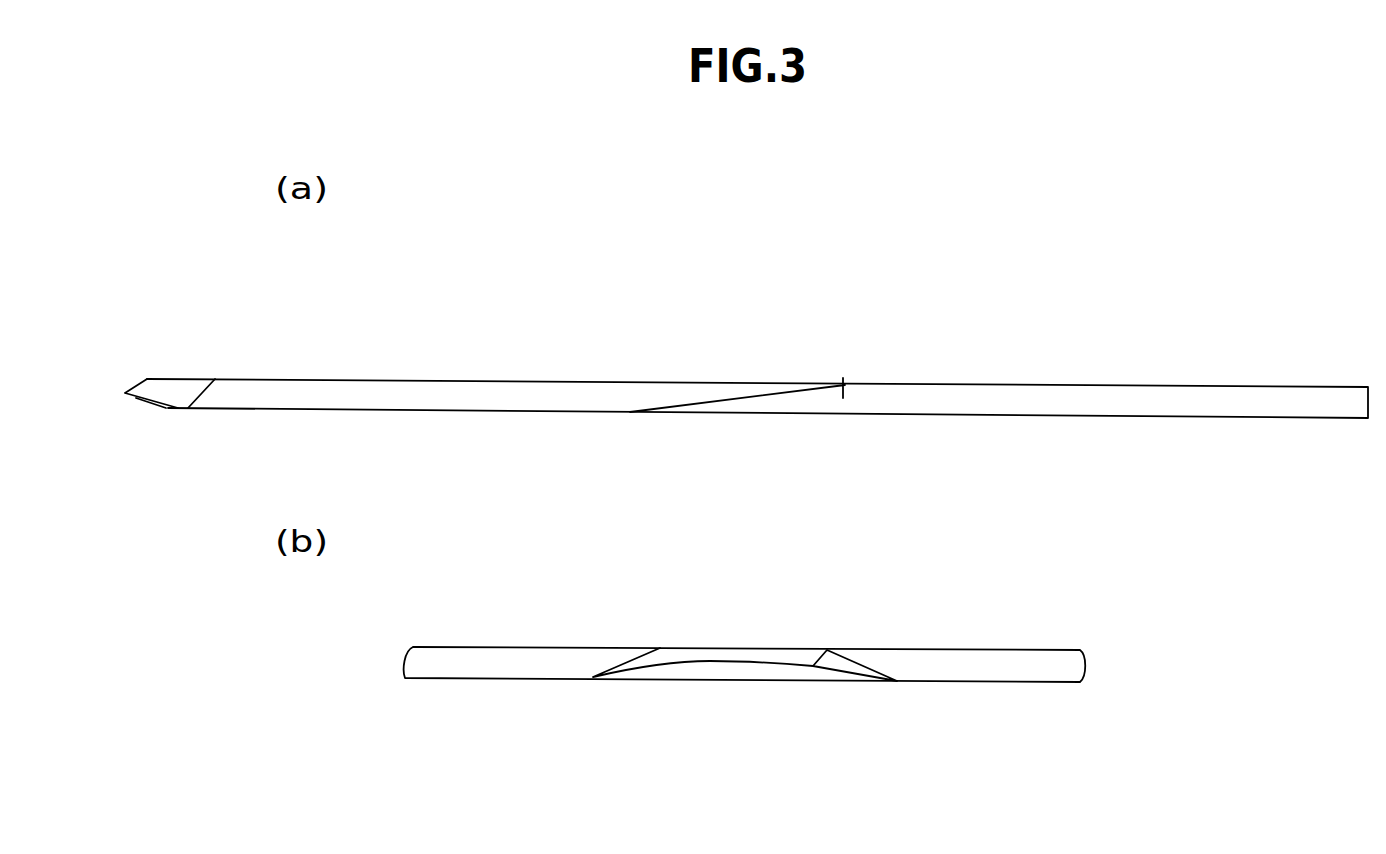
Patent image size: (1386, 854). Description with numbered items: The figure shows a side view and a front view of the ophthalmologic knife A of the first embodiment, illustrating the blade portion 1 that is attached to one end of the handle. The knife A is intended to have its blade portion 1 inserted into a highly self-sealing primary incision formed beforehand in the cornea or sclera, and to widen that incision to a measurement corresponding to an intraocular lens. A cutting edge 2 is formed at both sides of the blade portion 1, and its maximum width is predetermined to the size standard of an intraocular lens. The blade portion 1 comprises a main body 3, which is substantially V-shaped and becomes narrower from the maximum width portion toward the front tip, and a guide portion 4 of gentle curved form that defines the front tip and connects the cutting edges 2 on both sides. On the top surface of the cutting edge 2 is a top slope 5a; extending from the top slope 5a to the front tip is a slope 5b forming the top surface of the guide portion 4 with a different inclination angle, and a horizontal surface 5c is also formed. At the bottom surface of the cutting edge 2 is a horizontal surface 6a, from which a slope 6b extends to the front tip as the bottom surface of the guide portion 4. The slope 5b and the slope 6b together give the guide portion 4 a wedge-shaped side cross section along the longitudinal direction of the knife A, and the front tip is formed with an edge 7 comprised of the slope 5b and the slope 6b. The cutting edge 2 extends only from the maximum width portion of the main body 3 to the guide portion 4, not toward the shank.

The blade portion 1 is at (741, 505).
The cutting edge 2 is at (412, 412).
The main body 3 is at (597, 505).
The guide portion 4 is at (162, 364).
The top slope 5a is at (322, 393).
The slope 5b is at (182, 383).
The horizontal surface 5c is at (452, 380).
The horizontal surface 6a is at (308, 412).
The slope 6b is at (148, 407).
The edge 7 is at (125, 394).
The knife A is at (843, 384).